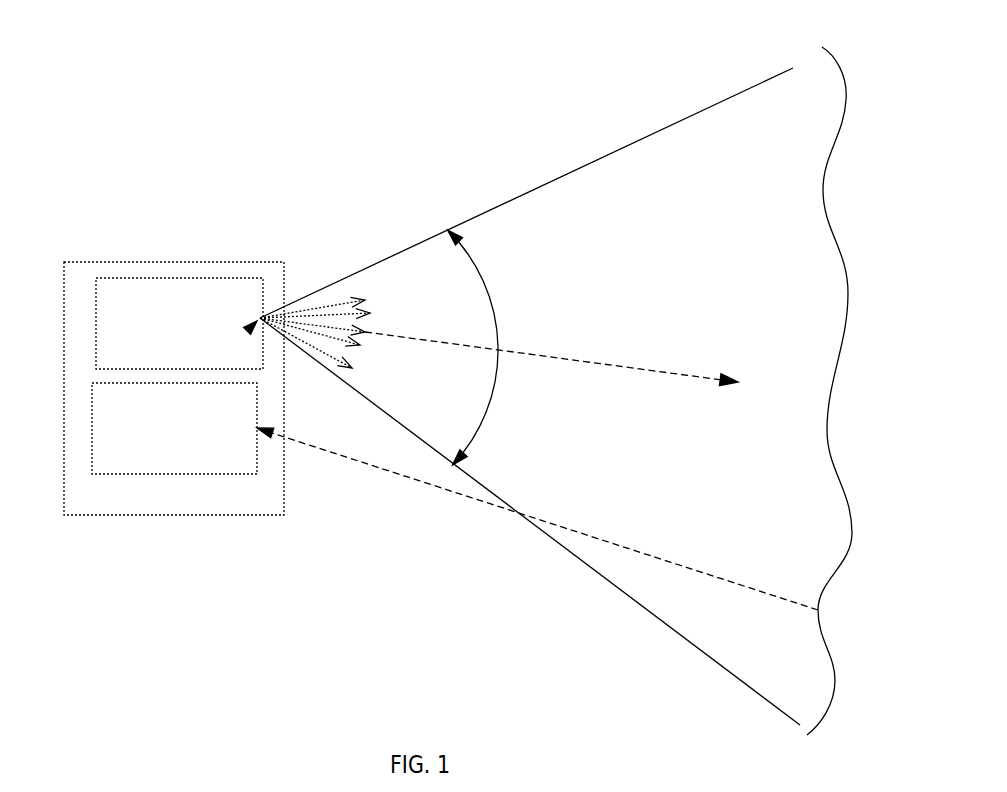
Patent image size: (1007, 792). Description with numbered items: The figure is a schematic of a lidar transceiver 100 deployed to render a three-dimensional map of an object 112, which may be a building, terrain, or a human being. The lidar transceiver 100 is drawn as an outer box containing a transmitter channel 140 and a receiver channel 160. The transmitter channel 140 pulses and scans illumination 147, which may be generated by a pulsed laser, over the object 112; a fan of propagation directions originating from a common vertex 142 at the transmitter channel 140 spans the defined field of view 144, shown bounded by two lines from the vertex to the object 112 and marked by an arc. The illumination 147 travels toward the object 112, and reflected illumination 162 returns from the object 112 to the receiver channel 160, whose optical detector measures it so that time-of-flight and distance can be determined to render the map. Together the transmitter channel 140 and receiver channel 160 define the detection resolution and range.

The lidar transceiver 100 is at (260, 508).
The transmitter channel 140 is at (132, 360).
The receiver channel 160 is at (190, 455).
The common vertex 142 is at (248, 333).
The field of view 144 is at (463, 250).
The illumination 147 is at (552, 357).
The reflected illumination 162 is at (640, 553).
The object 112 is at (809, 375).